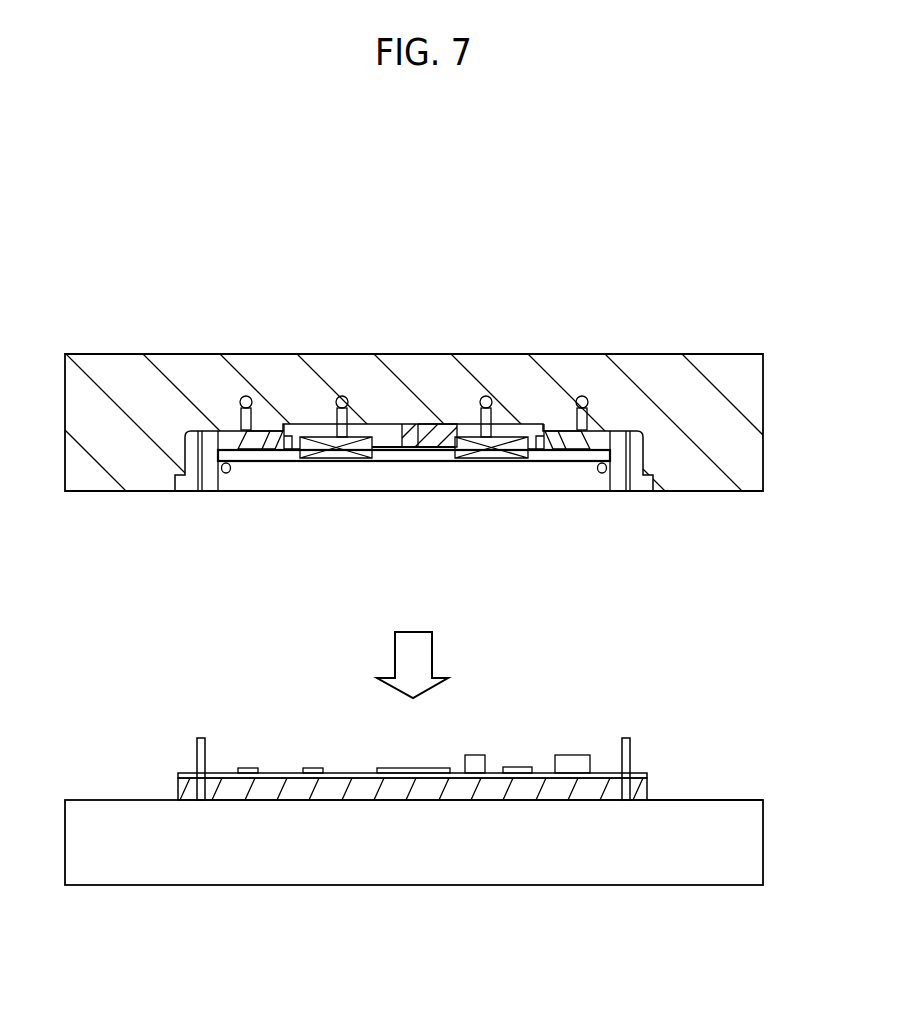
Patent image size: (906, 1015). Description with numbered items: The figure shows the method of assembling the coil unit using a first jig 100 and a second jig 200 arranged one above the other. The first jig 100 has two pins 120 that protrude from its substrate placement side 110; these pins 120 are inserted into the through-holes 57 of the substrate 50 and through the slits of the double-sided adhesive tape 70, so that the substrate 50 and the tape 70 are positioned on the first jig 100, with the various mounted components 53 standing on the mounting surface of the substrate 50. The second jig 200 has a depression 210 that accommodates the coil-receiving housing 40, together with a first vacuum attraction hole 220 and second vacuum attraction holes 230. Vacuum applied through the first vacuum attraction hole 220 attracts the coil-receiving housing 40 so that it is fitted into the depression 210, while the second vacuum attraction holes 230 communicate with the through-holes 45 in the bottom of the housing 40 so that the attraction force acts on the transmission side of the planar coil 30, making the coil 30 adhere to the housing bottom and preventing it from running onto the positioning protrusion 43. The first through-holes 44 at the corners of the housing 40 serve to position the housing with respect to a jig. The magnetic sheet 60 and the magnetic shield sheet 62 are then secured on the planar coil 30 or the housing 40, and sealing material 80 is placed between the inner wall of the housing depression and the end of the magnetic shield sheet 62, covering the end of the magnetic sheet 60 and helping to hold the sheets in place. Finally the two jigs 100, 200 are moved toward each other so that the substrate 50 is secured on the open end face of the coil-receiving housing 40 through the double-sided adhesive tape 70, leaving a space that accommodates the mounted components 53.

The second jig 200 is at (668, 372).
The first vacuum attraction hole 220 is at (244, 396).
The second vacuum attraction hole 230 is at (338, 396).
The coil-receiving housing 40 is at (303, 424).
The second through-hole 45 is at (347, 437).
The depression 210 is at (412, 424).
The positioning protrusion 43 is at (440, 424).
The first through-hole 44 is at (202, 491).
The magnetic sheet 60 is at (414, 505).
The magnetic shield sheet 62 is at (357, 463).
The planar coil 30 is at (490, 463).
The sealing material 80 is at (231, 473).
The first jig 100 is at (105, 862).
The substrate placement side 110 is at (700, 798).
The substrate 50 is at (427, 790).
The double-sided adhesive tape 70 is at (275, 771).
The mounted component 53 is at (475, 760).
The pin 120 is at (197, 742).
The through-hole 57 is at (201, 801).